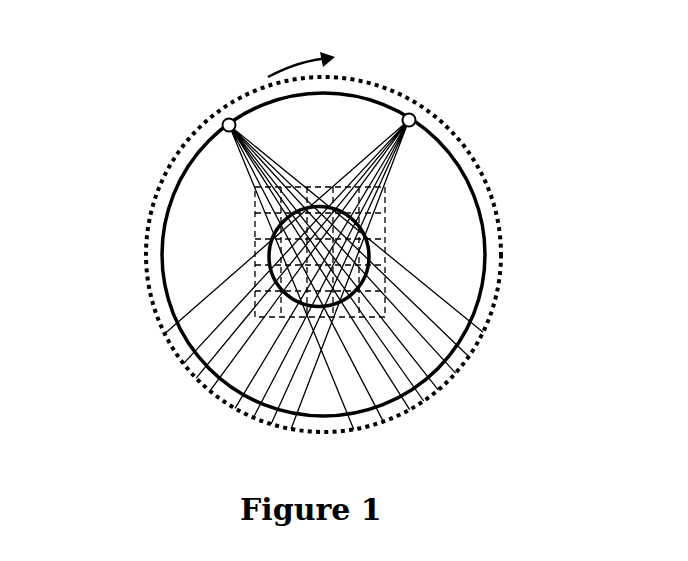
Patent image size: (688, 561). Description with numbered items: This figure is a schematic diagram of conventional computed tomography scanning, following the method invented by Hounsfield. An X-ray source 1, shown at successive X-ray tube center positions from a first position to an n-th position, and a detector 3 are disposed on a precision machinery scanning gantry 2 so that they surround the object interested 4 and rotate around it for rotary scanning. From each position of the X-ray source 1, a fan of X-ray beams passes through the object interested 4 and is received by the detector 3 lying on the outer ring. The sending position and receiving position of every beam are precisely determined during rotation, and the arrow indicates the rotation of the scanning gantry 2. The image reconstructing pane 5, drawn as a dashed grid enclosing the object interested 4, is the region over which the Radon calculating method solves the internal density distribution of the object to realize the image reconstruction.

The X-ray source 1 is at (223, 123).
The scanning gantry 2 is at (160, 250).
The detector 3 is at (192, 372).
The object interested 4 is at (372, 250).
The image reconstructing pane 5 is at (377, 230).